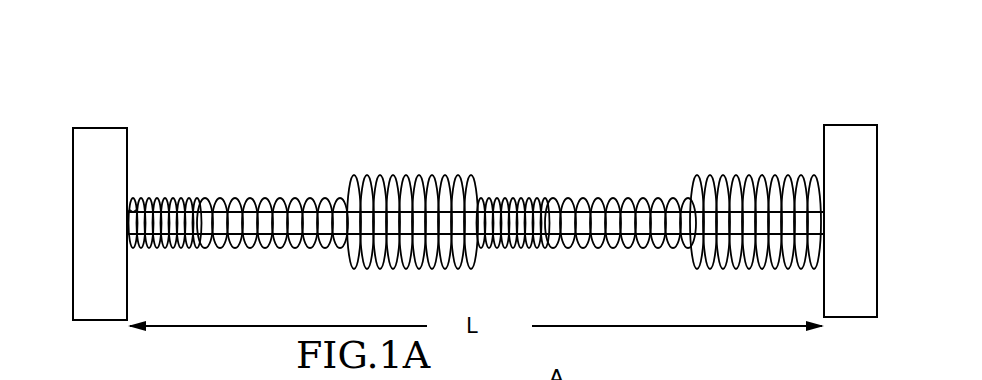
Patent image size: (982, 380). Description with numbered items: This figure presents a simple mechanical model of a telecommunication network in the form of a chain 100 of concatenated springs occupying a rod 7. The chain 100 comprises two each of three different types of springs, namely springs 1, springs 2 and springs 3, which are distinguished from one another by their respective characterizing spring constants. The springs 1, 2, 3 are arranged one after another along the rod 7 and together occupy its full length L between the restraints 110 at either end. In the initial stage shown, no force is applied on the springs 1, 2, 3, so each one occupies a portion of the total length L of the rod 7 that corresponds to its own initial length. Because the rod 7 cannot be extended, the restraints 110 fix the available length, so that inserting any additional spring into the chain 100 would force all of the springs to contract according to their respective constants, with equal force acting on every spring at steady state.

The chain 100 is at (481, 102).
The restraints 110 is at (98, 126).
The spring 1 is at (154, 198).
The spring 2 is at (252, 198).
The spring 3 is at (383, 176).
The rod 7 is at (225, 232).